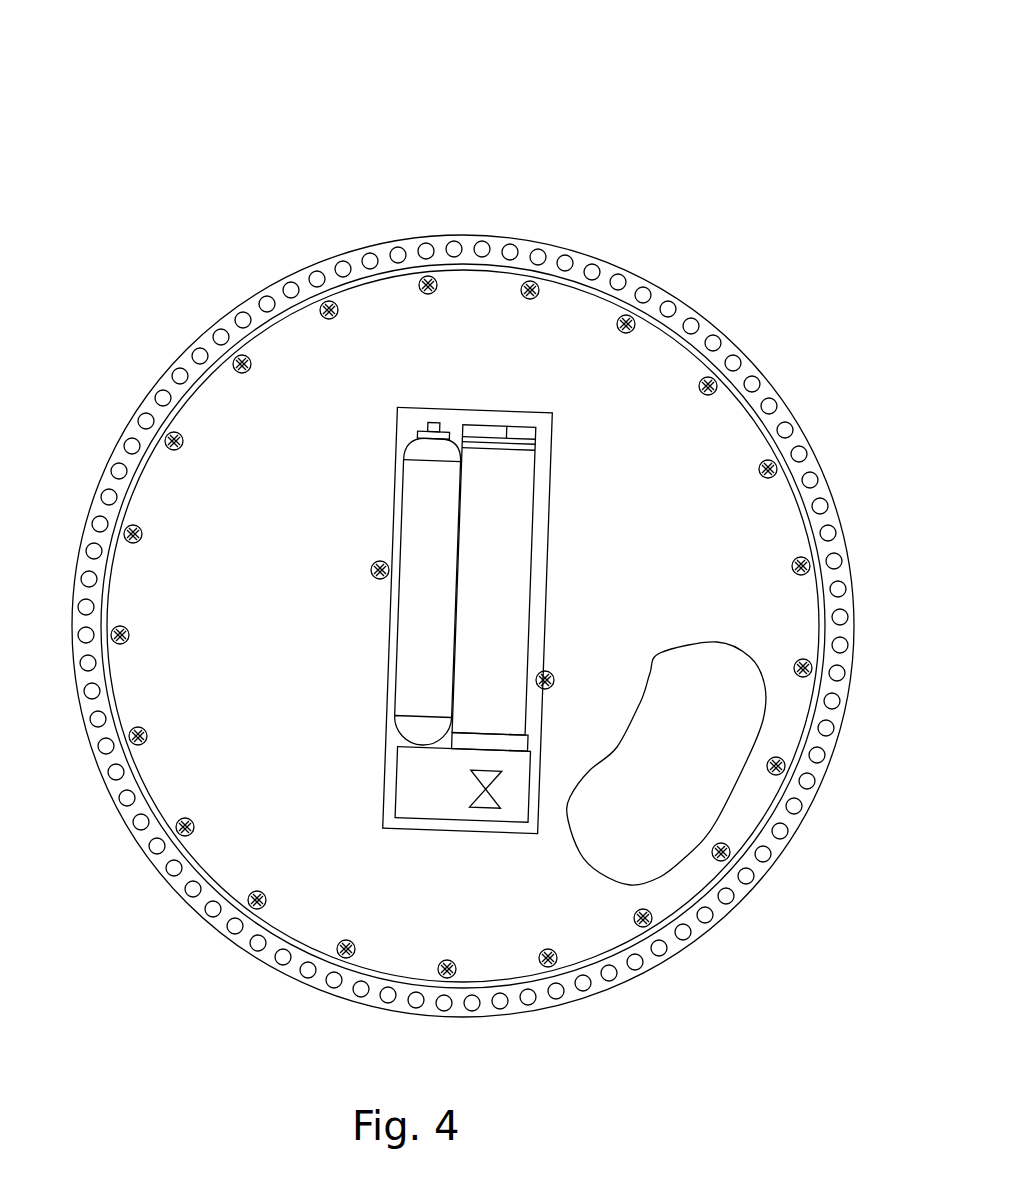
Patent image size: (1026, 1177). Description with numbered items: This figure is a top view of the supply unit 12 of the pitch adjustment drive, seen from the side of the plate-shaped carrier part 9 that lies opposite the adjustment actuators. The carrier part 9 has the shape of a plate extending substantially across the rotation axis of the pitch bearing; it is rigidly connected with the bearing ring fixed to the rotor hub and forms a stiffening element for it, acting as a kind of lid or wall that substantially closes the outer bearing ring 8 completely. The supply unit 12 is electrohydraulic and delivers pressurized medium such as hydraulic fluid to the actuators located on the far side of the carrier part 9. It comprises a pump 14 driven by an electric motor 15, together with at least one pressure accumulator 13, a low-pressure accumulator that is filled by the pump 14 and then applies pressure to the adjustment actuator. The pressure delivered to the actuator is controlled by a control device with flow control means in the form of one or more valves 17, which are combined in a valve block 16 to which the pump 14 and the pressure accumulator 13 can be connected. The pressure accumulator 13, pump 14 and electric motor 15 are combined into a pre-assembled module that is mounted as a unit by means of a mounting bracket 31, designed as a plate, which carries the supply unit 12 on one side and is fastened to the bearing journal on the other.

The outer bearing ring 8 is at (220, 905).
The carrier part 9 is at (632, 382).
The supply unit 12 is at (466, 578).
The pressure accumulator 13 is at (413, 648).
The pump 14 is at (518, 705).
The electric motor 15 is at (508, 522).
The valve block 16 is at (440, 805).
The valves 17 is at (500, 787).
The mounting bracket 31 is at (422, 412).